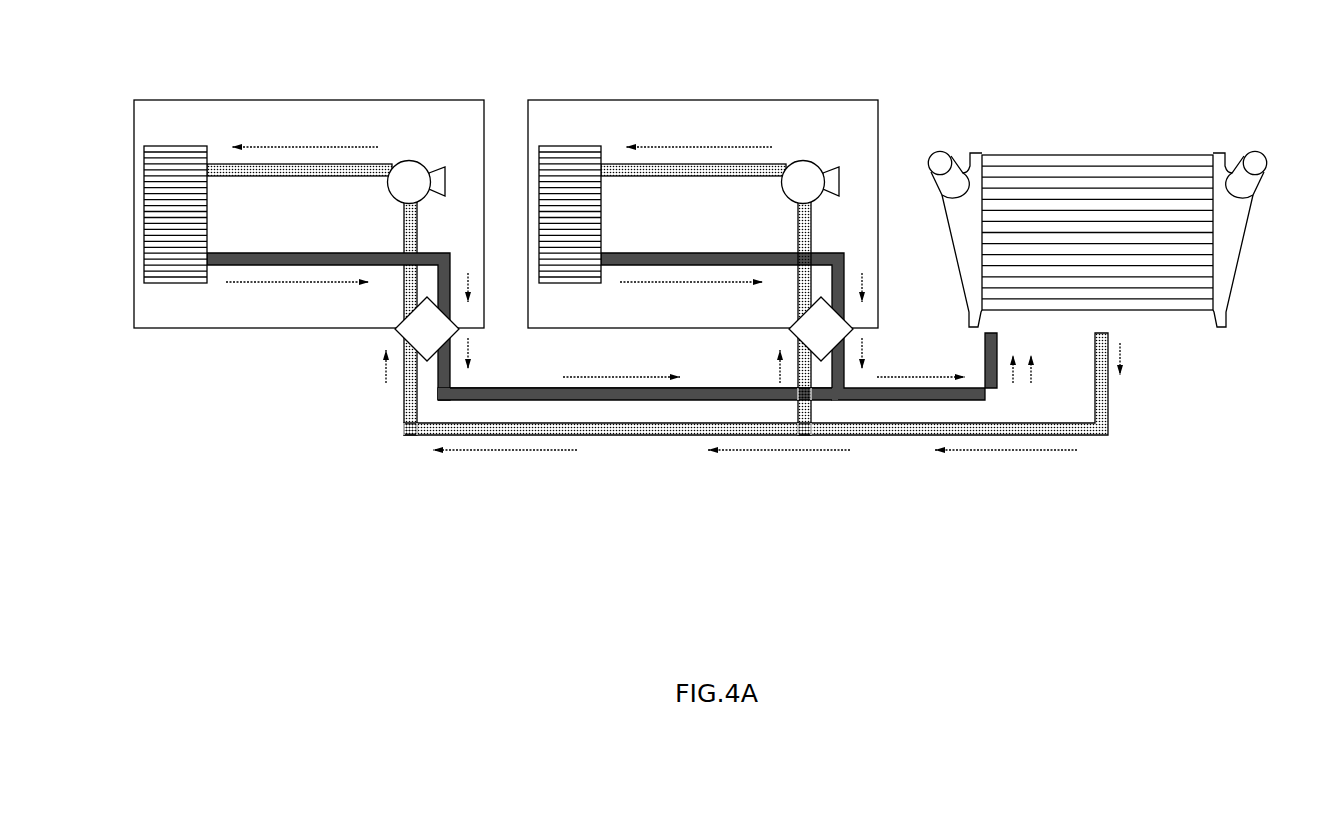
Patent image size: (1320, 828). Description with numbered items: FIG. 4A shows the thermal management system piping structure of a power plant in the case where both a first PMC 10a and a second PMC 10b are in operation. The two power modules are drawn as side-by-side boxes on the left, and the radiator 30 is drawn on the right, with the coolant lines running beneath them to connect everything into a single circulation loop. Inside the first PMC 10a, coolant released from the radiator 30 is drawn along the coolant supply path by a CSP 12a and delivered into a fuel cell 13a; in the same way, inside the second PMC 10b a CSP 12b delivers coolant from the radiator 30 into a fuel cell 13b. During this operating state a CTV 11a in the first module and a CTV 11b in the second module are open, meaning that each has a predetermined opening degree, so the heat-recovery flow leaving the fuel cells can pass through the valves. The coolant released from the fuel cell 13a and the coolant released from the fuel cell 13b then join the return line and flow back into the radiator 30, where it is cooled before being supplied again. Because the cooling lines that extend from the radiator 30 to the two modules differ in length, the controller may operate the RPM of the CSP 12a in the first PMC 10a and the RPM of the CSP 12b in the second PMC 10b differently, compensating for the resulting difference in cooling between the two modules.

The first PMC 10a is at (307, 100).
The second PMC 10b is at (701, 100).
The CTV 11a is at (460, 323).
The CTV 11b is at (854, 323).
The CSP 12a is at (393, 197).
The CSP 12b is at (787, 197).
The fuel cell 13a is at (171, 146).
The fuel cell 13b is at (565, 146).
The radiator 30 is at (1096, 153).